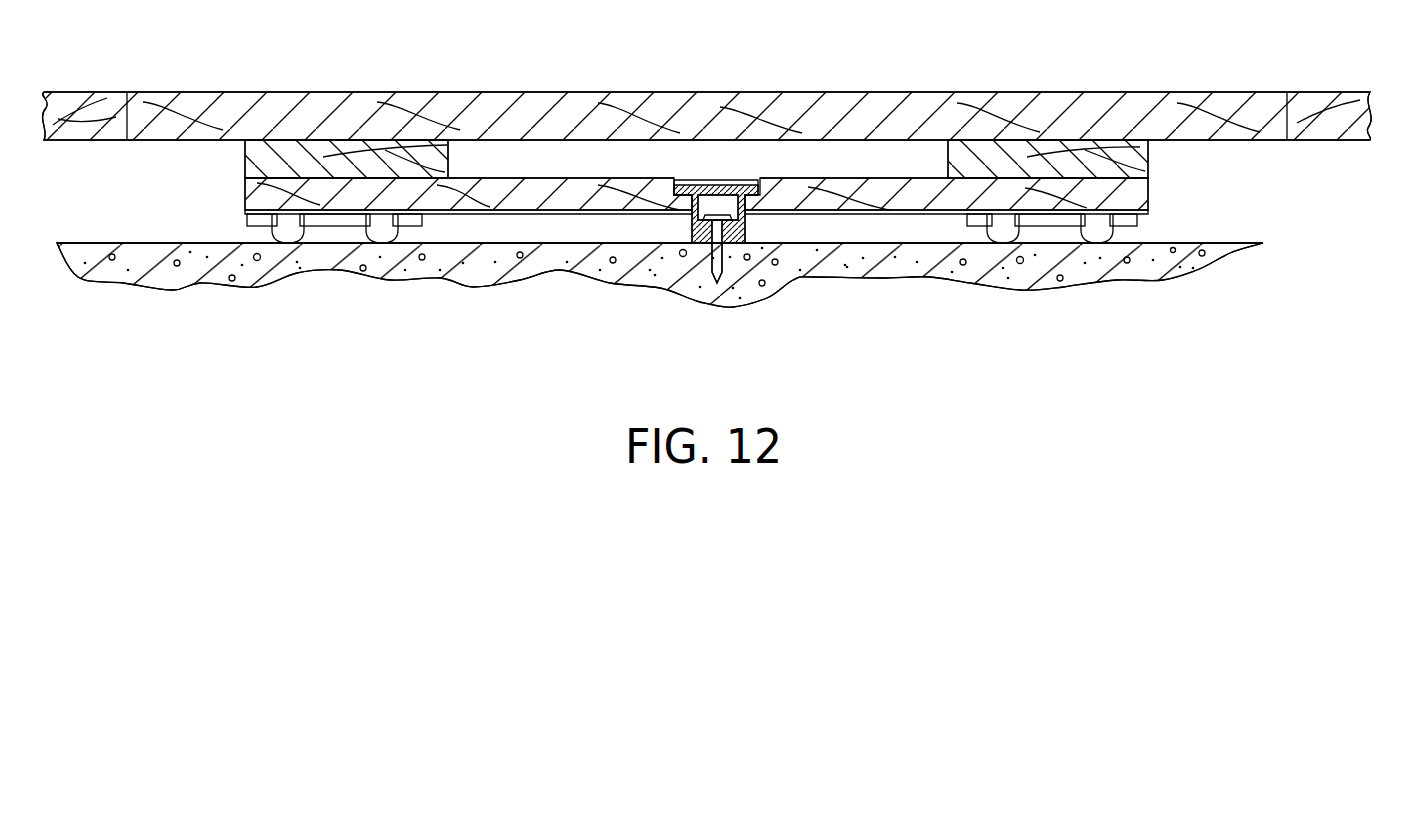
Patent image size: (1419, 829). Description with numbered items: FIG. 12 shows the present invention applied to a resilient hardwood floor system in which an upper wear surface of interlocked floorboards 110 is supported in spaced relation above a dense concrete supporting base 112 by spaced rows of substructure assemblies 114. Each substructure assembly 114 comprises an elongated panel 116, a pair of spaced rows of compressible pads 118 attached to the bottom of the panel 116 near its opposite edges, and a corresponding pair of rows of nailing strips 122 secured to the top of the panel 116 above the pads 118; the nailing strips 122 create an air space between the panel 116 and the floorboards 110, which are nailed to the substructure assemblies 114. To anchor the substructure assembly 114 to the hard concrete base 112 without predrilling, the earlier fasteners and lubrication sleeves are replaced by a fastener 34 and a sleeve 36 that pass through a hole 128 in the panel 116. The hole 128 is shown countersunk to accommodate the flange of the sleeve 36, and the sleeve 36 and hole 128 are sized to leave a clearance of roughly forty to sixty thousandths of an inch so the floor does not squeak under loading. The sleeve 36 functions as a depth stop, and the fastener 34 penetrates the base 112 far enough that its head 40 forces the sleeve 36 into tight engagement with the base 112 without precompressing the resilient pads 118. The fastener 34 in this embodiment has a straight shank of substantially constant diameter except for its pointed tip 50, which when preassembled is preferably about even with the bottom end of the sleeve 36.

The floorboards 110 is at (223, 92).
The dense supporting base 112 is at (163, 289).
The substructure assembly 114 is at (1207, 184).
The elongated panel 116 is at (245, 197).
The compressible pads 118 is at (1105, 232).
The nailing strips 122 is at (245, 165).
The holes 128 is at (684, 261).
The sleeve 36 is at (745, 228).
The head 40 is at (680, 198).
The pointed tip 50 is at (680, 299).
The fastener 34 is at (711, 248).